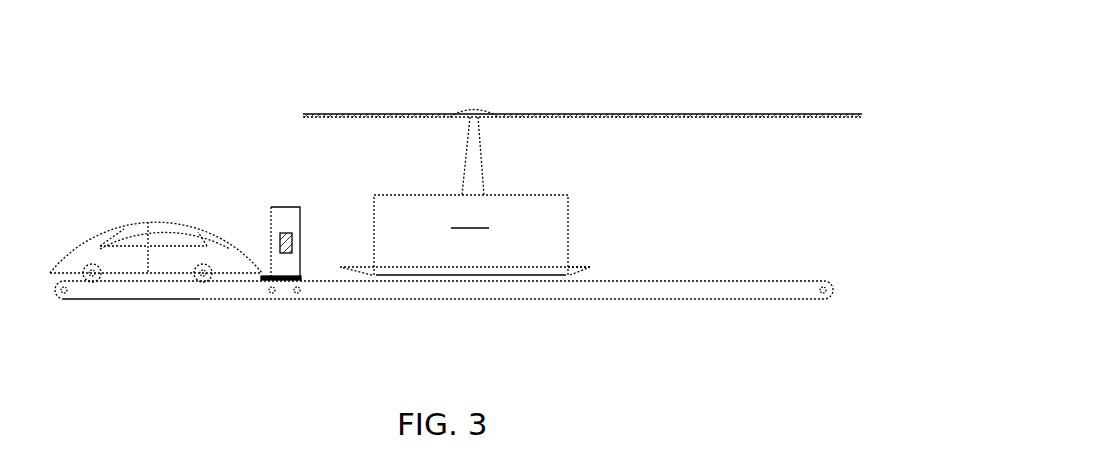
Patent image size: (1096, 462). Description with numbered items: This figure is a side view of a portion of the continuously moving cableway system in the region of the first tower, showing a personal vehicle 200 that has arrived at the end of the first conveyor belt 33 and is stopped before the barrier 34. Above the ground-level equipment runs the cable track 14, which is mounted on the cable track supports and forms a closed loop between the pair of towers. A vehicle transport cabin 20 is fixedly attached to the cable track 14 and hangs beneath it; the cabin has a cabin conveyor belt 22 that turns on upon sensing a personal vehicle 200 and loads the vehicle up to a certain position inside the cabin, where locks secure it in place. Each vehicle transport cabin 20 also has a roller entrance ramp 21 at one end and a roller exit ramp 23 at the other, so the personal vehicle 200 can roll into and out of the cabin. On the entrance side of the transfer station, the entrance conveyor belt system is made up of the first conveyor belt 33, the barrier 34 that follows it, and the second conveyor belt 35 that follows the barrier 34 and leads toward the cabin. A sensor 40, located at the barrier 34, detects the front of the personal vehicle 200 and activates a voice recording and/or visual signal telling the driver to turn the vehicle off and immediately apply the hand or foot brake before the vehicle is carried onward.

The cable track 14 is at (660, 117).
The vehicle transport cabin 20 is at (471, 235).
The roller entrance ramp 21 is at (362, 270).
The cabin conveyor belt 22 is at (438, 270).
The roller exit ramp 23 is at (580, 269).
The first conveyor belt 33 is at (125, 293).
The barrier 34 is at (284, 264).
The second conveyor belt 35 is at (728, 291).
The sensor 40 is at (281, 232).
The personal vehicle 200 is at (160, 230).